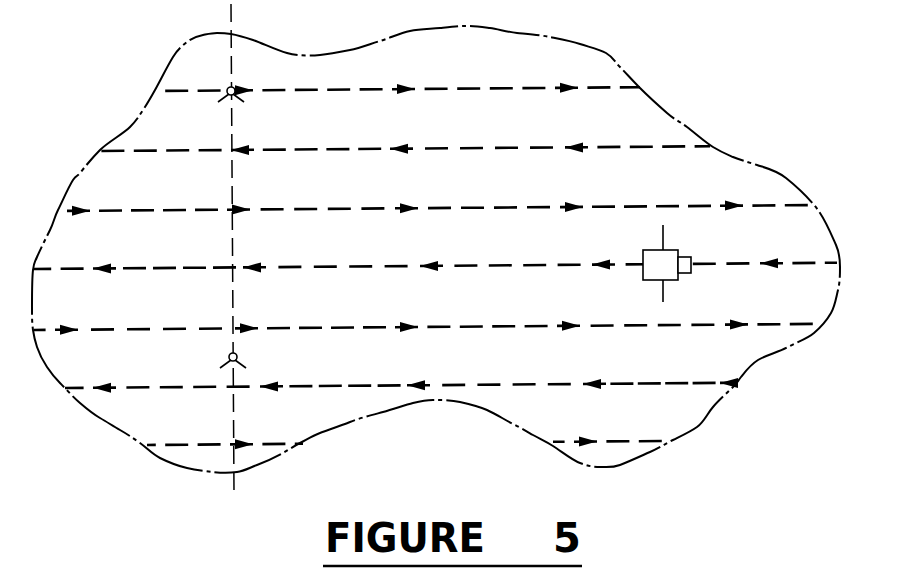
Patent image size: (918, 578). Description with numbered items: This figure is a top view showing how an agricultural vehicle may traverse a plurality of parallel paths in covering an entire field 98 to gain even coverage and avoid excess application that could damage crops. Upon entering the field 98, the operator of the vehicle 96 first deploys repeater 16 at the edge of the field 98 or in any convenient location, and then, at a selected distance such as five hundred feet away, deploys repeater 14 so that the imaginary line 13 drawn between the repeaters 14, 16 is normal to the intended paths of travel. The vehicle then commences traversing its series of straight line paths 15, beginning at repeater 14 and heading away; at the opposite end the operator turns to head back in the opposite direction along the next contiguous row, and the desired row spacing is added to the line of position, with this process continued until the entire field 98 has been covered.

The line between the repeaters 13 is at (233, 16).
The repeater 14 is at (229, 88).
The straight line paths 15 is at (672, 147).
The repeater 16 is at (237, 357).
The vehicle 96 is at (675, 279).
The field 98 is at (752, 367).